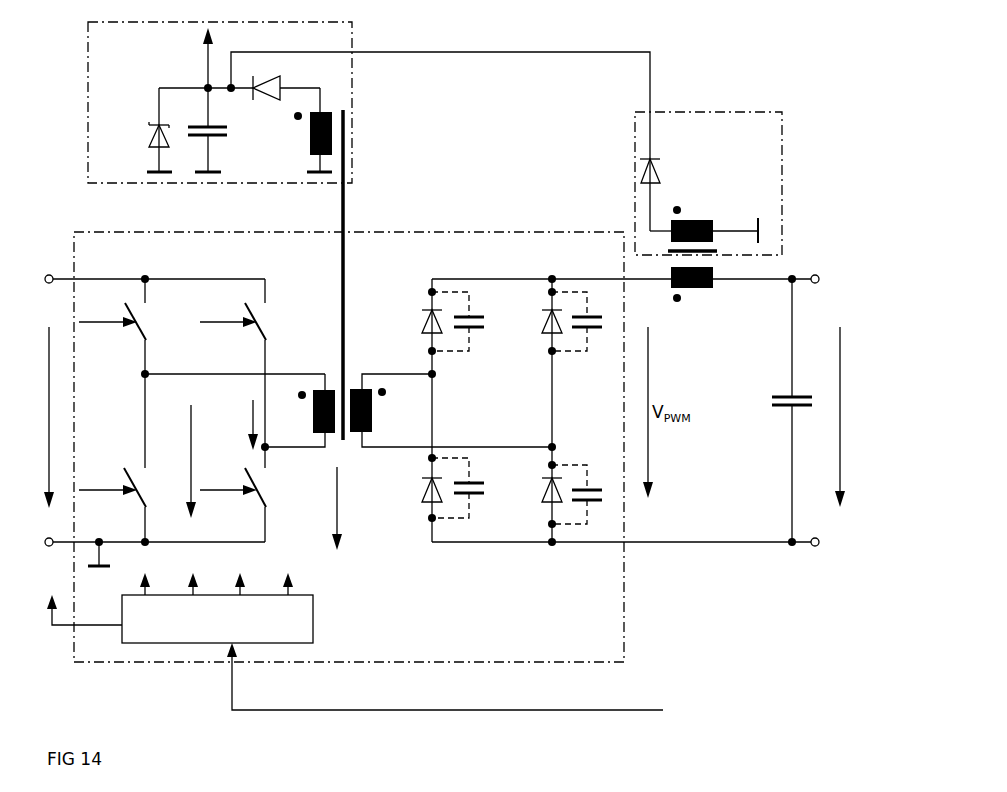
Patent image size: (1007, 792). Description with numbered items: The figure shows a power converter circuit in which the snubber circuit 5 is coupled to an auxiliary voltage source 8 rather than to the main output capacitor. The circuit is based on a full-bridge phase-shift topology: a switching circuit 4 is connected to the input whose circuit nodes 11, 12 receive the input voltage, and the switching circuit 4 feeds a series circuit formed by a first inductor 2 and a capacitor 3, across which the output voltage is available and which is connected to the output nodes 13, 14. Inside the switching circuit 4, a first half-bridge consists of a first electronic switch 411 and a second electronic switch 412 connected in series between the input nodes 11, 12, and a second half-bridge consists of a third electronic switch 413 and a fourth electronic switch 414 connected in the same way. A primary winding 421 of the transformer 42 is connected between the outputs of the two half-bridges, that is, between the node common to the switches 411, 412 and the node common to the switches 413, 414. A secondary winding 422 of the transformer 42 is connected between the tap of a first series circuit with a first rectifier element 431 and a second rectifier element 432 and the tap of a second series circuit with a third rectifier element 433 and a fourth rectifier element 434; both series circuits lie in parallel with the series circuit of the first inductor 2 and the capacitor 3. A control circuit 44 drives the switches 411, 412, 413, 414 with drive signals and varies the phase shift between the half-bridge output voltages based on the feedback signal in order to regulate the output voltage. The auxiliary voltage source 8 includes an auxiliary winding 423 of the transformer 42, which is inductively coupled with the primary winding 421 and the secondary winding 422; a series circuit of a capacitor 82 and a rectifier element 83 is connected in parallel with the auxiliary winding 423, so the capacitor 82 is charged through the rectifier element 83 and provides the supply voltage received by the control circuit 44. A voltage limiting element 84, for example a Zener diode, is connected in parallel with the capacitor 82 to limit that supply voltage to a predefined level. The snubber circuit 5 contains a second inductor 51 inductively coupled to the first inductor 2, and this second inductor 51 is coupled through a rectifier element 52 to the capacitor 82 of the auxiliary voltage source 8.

The first inductor 2 is at (705, 294).
The capacitor 3 is at (800, 392).
The switching circuit 4 is at (372, 232).
The snubber circuit 5 is at (782, 150).
The auxiliary voltage source 8 is at (352, 40).
The circuit node of the input 11 is at (47, 272).
The circuit node of the input 12 is at (47, 550).
The first output terminal 13 is at (816, 273).
The second output terminal 14 is at (818, 550).
The first electronic switch 411 is at (148, 318).
The second electronic switch 412 is at (148, 483).
The third electronic switch 413 is at (268, 318).
The fourth electronic switch 414 is at (270, 497).
The transformer 42 is at (330, 375).
The primary winding 421 is at (313, 420).
The secondary winding 422 is at (372, 422).
The auxiliary winding 423 is at (308, 150).
The first rectifier element 431 is at (422, 320).
The second rectifier element 432 is at (422, 488).
The third rectifier element 433 is at (542, 322).
The fourth rectifier element 434 is at (542, 490).
The control circuit 44 is at (313, 605).
The second inductor 51 is at (717, 224).
The rectifier element 52 is at (667, 172).
The capacitor 82 is at (229, 133).
The rectifier element 83 is at (282, 84).
The voltage limiting element 84 is at (140, 137).